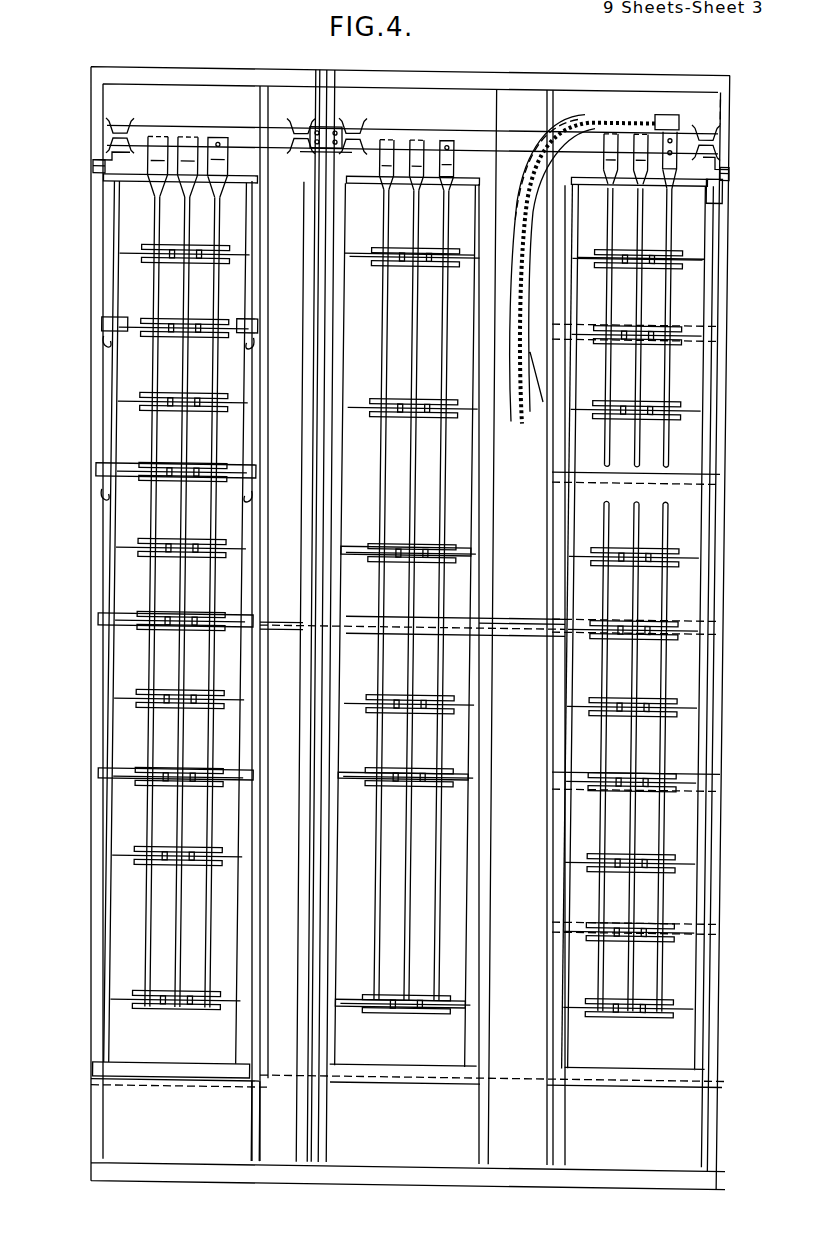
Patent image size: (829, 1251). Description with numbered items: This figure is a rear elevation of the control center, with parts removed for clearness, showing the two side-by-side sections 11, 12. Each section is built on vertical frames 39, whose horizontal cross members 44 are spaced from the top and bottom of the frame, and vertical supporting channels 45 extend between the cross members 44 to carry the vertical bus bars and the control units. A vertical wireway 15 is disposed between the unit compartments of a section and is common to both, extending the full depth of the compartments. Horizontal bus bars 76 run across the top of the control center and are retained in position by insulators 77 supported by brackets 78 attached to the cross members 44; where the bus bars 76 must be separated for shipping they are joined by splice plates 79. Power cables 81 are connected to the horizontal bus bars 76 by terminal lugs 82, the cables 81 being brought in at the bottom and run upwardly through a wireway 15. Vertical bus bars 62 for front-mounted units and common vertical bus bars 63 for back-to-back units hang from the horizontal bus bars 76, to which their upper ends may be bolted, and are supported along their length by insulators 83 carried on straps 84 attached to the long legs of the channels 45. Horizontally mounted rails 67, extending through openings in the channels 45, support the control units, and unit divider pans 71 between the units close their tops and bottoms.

The section 11 is at (534, 64).
The section 12 is at (210, 61).
The vertical wireway 15 is at (298, 726).
The vertical frame 39 is at (296, 1138).
The horizontal cross member 44 is at (730, 170).
The vertical supporting channel 45 is at (572, 237).
The vertical bus bar 62 is at (386, 228).
The common vertical bus bar 63 is at (159, 225).
The rail 67 is at (107, 354).
The unit divider pan 71 is at (103, 327).
The horizontal bus bar 76 is at (166, 131).
The insulator 77 is at (303, 126).
The bracket 78 is at (727, 159).
The splice plate 79 is at (336, 126).
The power cable 81 is at (522, 425).
The terminal lug 82 is at (676, 119).
The insulator 83 is at (223, 248).
The strap 84 is at (131, 258).